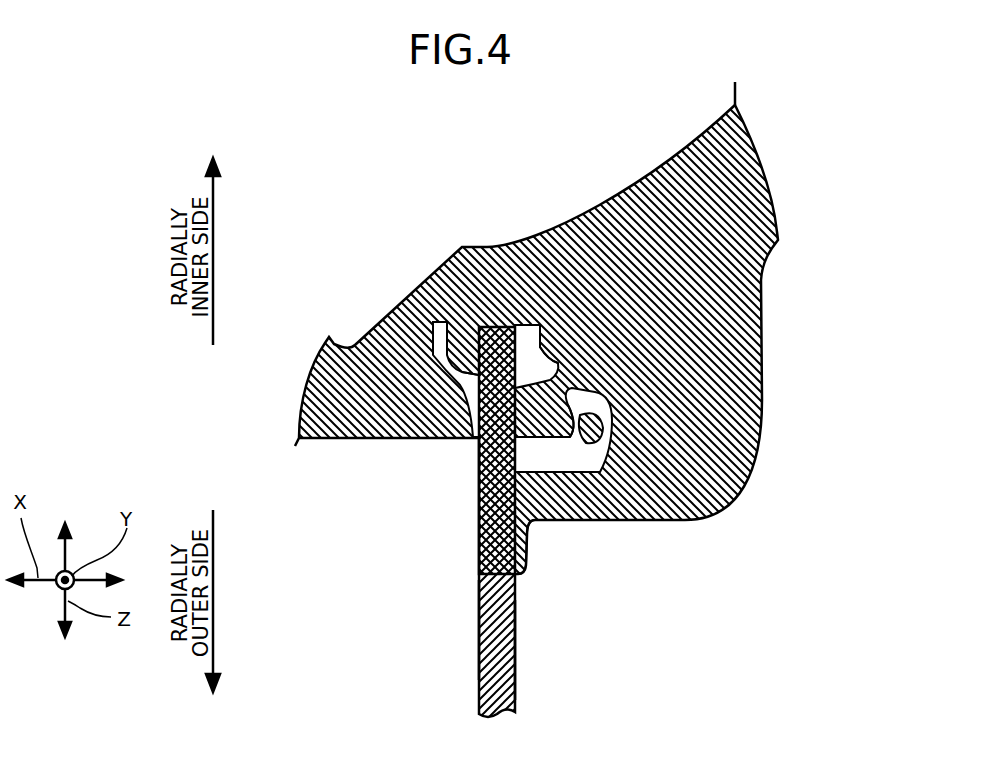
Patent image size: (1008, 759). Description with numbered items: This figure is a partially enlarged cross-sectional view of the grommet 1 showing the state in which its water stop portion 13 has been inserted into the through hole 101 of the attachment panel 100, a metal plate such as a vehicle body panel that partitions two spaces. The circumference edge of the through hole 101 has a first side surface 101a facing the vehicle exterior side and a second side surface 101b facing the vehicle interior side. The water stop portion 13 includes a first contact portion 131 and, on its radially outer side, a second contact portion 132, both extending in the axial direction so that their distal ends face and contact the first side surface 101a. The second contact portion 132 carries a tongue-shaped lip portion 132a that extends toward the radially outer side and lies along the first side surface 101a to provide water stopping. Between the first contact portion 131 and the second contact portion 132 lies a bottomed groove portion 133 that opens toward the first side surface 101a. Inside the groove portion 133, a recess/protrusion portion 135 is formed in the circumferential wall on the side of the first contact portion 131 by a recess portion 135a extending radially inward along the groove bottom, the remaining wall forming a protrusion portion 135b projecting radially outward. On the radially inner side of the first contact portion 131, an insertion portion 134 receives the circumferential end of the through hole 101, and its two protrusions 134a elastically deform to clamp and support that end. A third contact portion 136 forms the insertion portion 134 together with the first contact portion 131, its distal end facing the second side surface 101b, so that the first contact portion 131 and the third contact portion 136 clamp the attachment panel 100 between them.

The grommet 1 is at (774, 122).
The water stop portion 13 is at (742, 485).
The attachment panel 100 is at (470, 685).
The through hole 101 is at (497, 327).
The first side surface 101a is at (516, 687).
The second side surface 101b is at (478, 622).
The first contact portion 131 is at (513, 468).
The second contact portion 132 is at (514, 519).
The lip portion 132a is at (524, 569).
The groove portion 133 is at (550, 476).
The insertion portion 134 is at (547, 390).
The protrusions 134a is at (447, 372).
The recess/protrusion portion 135 is at (716, 404).
The recess portion 135a is at (603, 443).
The protrusion portion 135b is at (568, 465).
The third contact portion 136 is at (477, 440).